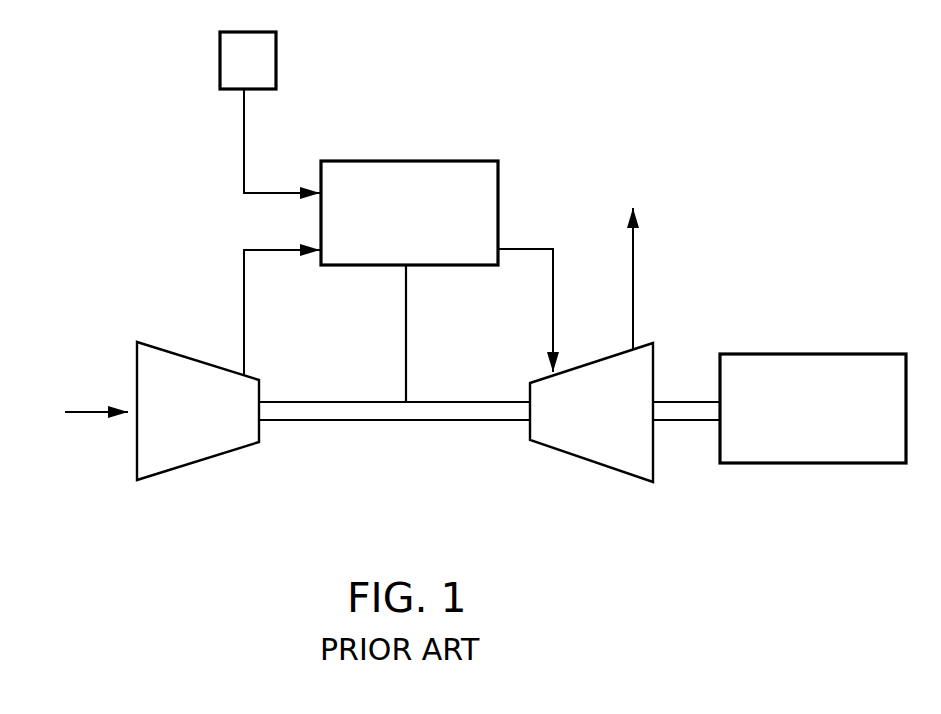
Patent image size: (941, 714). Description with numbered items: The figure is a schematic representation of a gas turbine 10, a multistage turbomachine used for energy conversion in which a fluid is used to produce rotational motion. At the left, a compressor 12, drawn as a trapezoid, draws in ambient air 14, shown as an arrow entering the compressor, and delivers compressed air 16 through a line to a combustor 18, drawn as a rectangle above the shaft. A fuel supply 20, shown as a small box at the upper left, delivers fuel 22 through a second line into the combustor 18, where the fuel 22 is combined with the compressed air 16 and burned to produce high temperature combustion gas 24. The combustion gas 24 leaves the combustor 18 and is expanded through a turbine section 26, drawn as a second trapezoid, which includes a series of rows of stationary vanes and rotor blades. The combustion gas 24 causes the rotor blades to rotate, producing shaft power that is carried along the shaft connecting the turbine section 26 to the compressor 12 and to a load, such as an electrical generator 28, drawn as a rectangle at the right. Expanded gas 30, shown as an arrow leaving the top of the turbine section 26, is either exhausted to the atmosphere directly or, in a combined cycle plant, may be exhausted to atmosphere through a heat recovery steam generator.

The gas turbine 10 is at (490, 92).
The compressor 12 is at (202, 437).
The ambient air 14 is at (95, 408).
The compressed air 16 is at (244, 303).
The combustor 18 is at (402, 183).
The fuel supply 20 is at (218, 62).
The fuel 22 is at (244, 128).
The combustion gas 24 is at (527, 249).
The turbine section 26 is at (593, 443).
The electrical generator 28 is at (828, 450).
The expanded gas 30 is at (636, 278).